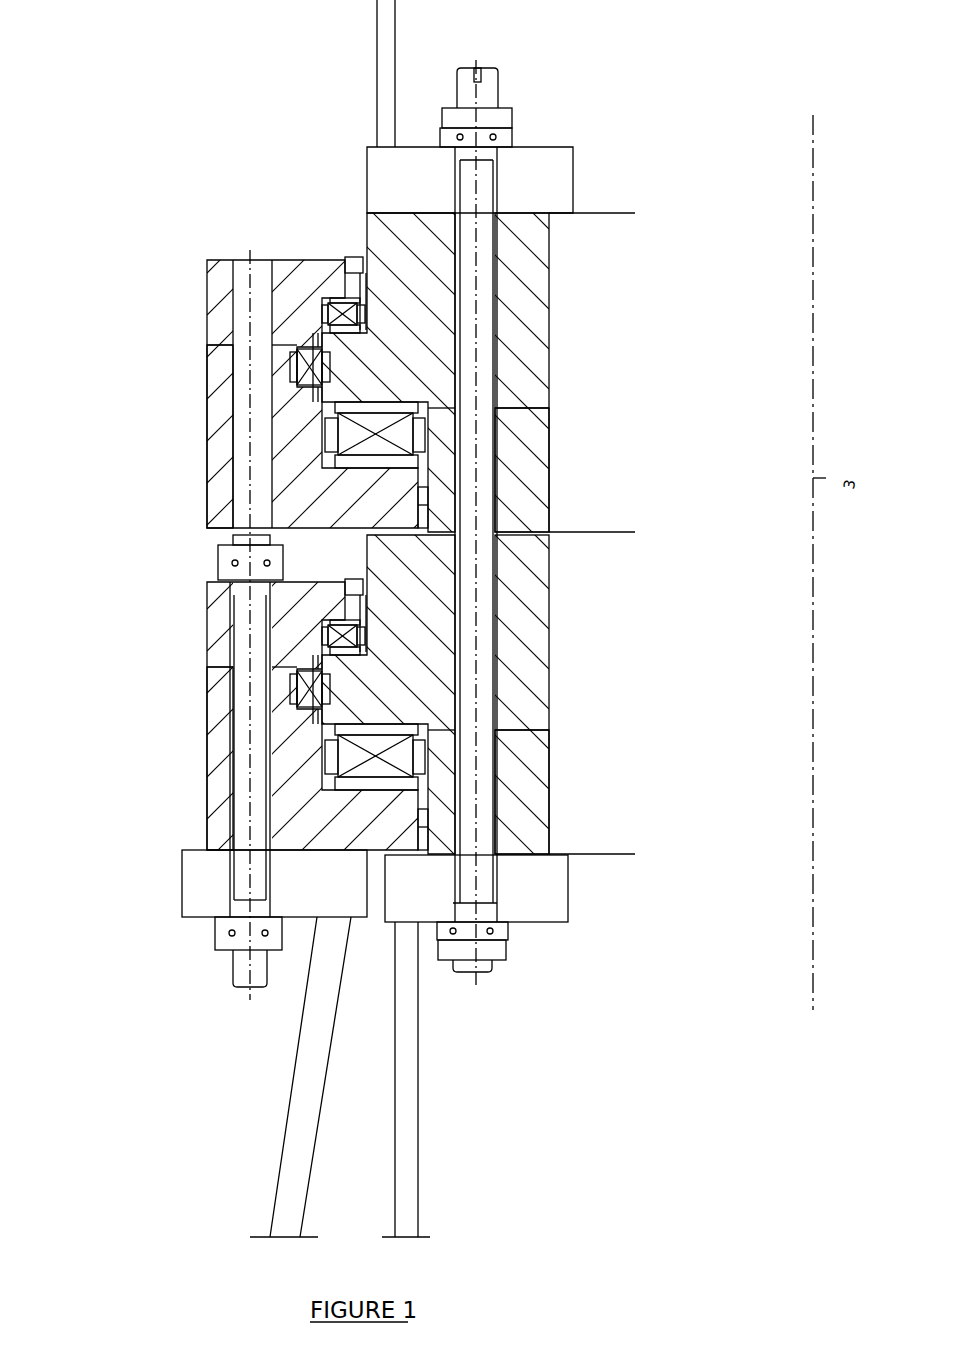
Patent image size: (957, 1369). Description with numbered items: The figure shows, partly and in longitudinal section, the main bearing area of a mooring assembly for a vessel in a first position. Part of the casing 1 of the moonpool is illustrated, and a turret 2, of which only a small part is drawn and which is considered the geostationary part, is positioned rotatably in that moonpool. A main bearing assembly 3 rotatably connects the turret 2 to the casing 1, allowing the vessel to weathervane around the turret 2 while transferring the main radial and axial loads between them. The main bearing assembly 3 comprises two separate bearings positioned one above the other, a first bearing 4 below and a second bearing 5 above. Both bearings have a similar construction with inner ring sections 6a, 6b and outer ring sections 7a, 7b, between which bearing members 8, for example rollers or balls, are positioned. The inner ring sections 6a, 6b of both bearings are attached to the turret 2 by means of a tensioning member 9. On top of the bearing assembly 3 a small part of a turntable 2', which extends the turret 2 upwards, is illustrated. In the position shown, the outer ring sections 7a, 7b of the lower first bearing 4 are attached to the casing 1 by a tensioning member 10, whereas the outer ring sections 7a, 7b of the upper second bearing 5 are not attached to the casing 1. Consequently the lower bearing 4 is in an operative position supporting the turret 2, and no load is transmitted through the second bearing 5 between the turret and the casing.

The casing 1 is at (302, 1137).
The turret 2 is at (431, 618).
The turntable 2' is at (502, 180).
The main bearing assembly 3 is at (745, 532).
The first bearing 4 is at (508, 695).
The second bearing 5 is at (508, 372).
The inner ring section 6a is at (527, 326).
The inner ring section 6b is at (527, 486).
The outer ring section 7a is at (222, 285).
The outer ring section 7b is at (222, 430).
The bearing members 8 is at (385, 441).
The tensioning member 9 is at (483, 193).
The tensioning member 10 is at (245, 806).